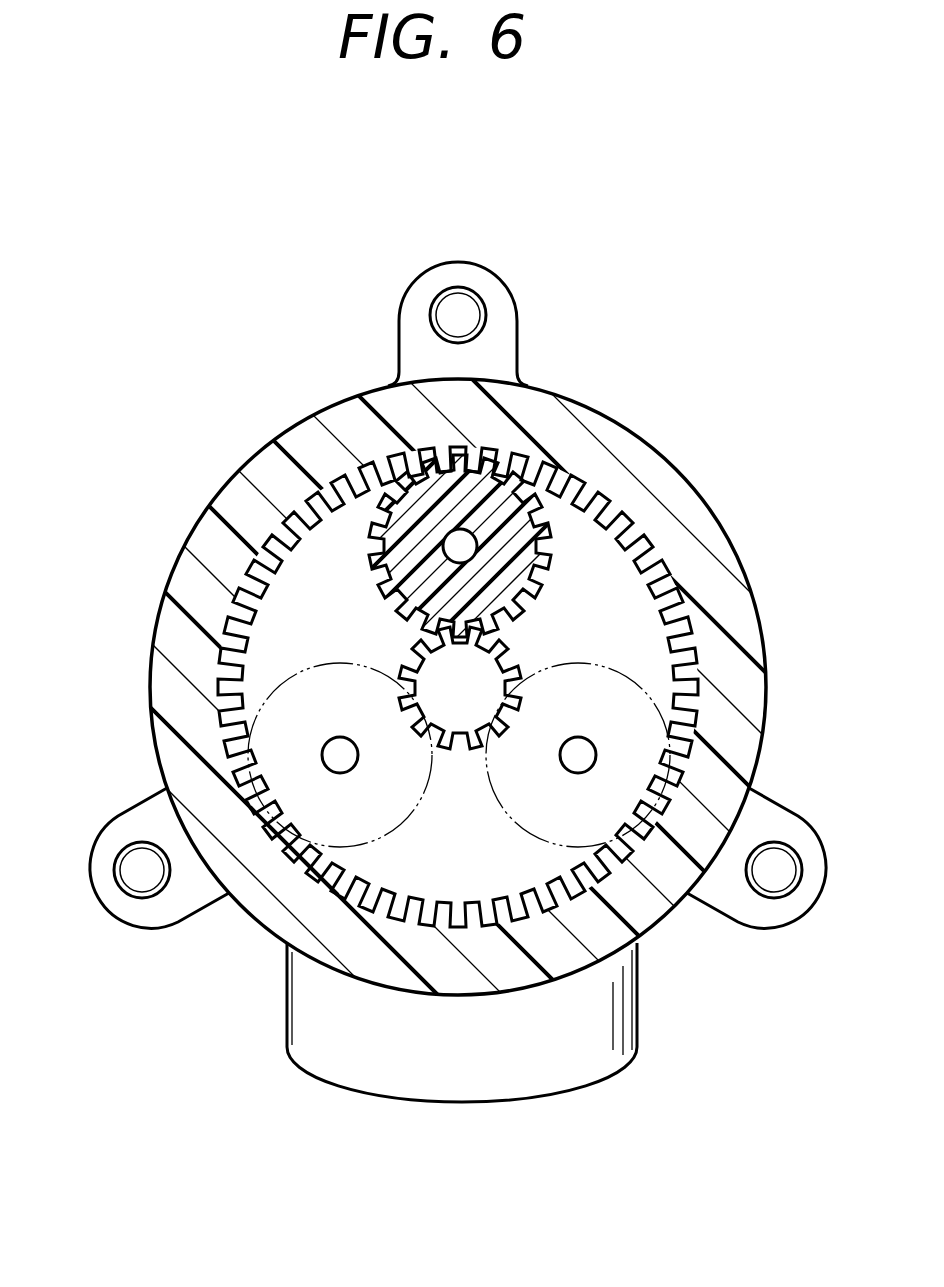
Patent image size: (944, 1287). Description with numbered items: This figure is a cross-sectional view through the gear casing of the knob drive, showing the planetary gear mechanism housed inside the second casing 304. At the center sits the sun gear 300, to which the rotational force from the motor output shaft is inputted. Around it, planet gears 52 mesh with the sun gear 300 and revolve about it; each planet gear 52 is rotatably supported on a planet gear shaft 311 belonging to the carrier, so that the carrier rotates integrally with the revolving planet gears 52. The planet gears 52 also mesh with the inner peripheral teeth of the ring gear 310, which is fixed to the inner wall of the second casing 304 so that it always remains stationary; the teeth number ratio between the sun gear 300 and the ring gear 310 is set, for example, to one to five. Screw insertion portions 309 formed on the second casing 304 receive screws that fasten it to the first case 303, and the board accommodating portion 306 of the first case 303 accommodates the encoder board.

The second casing 304 is at (532, 382).
The first case 303 is at (456, 262).
The screw insertion portions 309 is at (455, 306).
The ring gear 310 is at (270, 590).
The planet gear shafts 311 is at (458, 538).
The planet gears 52 is at (520, 555).
The sun gear 300 is at (410, 687).
The board accommodating portion 306 is at (625, 1040).